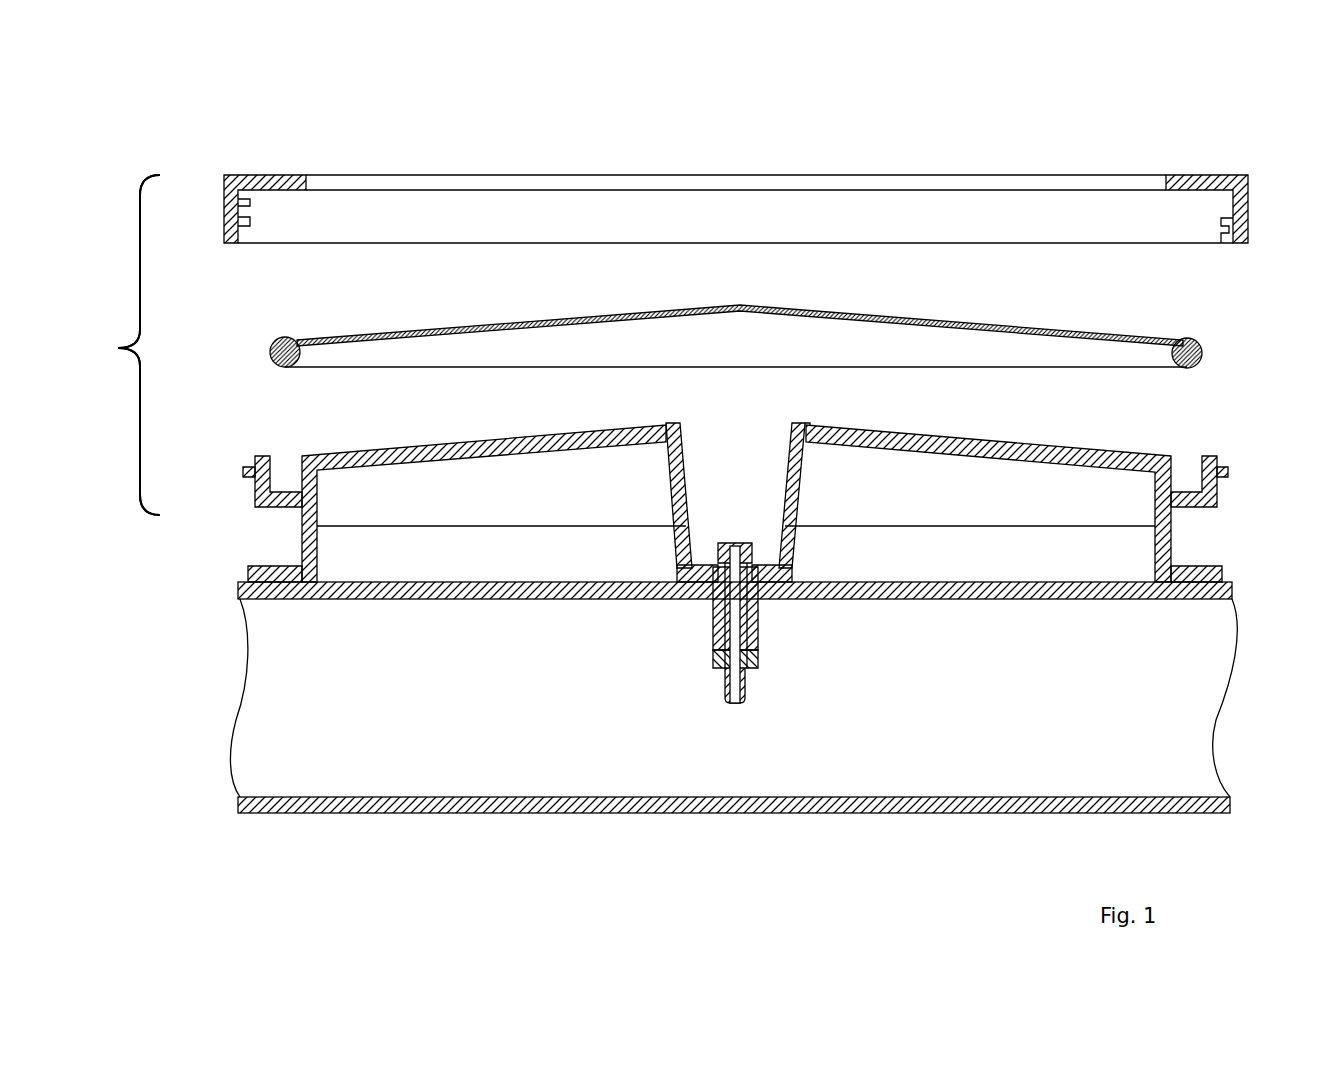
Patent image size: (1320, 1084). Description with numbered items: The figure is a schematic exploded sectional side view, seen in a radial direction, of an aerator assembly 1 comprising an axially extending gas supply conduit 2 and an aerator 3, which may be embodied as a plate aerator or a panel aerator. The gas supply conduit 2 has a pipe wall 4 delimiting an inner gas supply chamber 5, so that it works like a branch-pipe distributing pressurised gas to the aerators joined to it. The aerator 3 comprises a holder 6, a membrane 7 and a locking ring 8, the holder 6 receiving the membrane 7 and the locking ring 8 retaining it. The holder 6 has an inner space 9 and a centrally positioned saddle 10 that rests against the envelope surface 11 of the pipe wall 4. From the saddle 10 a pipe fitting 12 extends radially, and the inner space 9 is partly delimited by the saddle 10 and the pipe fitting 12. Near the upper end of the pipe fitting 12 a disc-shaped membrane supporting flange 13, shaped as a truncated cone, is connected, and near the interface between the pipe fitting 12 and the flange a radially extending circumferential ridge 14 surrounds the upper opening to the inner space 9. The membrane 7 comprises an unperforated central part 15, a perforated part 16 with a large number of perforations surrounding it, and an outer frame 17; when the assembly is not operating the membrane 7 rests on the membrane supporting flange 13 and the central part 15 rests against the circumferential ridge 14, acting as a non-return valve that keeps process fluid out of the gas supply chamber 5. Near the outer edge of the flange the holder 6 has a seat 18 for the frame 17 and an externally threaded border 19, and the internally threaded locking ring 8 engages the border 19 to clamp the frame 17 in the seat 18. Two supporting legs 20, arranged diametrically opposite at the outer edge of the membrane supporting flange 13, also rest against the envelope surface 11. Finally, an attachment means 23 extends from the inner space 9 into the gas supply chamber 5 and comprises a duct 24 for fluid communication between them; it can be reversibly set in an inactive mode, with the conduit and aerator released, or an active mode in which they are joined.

The aerator assembly 1 is at (713, 128).
The gas supply conduit 2 is at (240, 665).
The aerator 3 is at (126, 345).
The pipe wall 4 is at (1232, 590).
The gas supply chamber 5 is at (1228, 636).
The holder 6 is at (300, 501).
The membrane 7 is at (268, 351).
The locking ring 8 is at (219, 205).
The inner space 9 is at (690, 502).
The saddle 10 is at (692, 585).
The envelope surface 11 is at (638, 576).
The pipe fitting 12 is at (794, 484).
The membrane supporting flange 13 is at (932, 456).
The circumferential ridge 14 is at (806, 423).
The central part 15 is at (740, 305).
The perforated part 16 is at (968, 323).
The frame 17 is at (1188, 345).
The seat 18 is at (1188, 466).
The externally threaded border 19 is at (1218, 462).
The supporting legs 20 is at (263, 572).
The attachment means 23 is at (762, 628).
The duct 24 is at (741, 694).